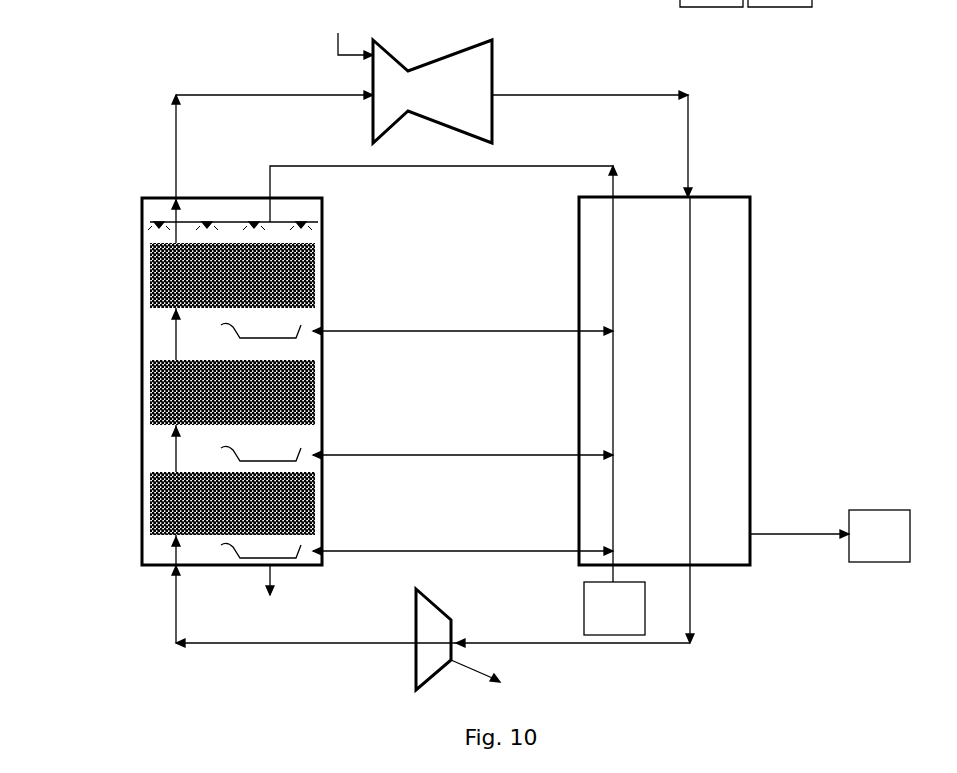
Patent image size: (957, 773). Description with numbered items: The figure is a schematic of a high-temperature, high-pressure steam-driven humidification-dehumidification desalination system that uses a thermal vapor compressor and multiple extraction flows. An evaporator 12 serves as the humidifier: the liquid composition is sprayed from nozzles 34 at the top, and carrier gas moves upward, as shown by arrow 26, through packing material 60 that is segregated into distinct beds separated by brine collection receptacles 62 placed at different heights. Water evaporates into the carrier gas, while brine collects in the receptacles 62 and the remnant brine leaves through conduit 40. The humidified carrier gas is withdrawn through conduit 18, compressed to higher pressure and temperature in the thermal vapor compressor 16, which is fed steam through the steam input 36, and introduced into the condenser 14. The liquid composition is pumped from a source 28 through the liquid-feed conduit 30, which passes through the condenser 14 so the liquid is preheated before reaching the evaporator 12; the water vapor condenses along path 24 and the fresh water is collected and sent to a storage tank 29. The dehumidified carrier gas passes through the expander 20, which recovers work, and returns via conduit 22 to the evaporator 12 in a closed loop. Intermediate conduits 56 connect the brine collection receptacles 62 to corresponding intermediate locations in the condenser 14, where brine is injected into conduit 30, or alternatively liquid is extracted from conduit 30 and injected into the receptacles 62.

The evaporator 12 is at (112, 268).
The condenser 14 is at (714, 381).
The thermal vapor compressor 16 is at (455, 76).
The conduit 18 is at (551, 96).
The expander 20 is at (428, 657).
The conduit 22 is at (511, 643).
The condensation path 24 is at (690, 342).
The carrier gas flow arrow 26 is at (176, 346).
The source 28 is at (614, 608).
The storage tank 29 is at (879, 536).
The liquid-feed conduit 30 is at (446, 167).
The nozzles 34 is at (162, 221).
The steam input conduit 36 is at (336, 53).
The brine output conduit 40 is at (274, 580).
The intermediate conduits 56 is at (453, 331).
The packing material 60 is at (232, 389).
The brine collection receptacles 62 is at (245, 438).